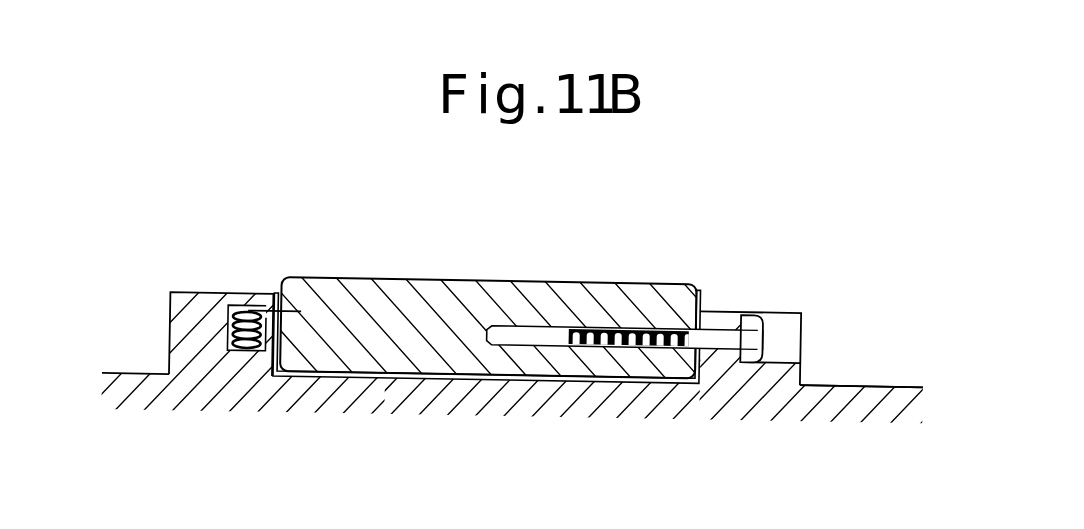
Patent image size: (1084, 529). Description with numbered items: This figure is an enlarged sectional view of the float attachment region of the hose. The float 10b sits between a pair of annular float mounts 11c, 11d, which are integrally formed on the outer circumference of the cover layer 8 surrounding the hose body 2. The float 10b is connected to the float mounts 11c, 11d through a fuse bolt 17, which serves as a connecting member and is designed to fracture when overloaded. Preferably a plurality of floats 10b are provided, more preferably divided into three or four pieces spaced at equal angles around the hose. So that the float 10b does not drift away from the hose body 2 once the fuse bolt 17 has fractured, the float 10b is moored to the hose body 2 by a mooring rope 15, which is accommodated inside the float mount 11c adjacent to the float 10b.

The hose body 2 is at (903, 372).
The cover layer 8 is at (835, 374).
The float 10b is at (548, 289).
The float mount 11c is at (195, 299).
The float mount 11d is at (717, 307).
The mooring rope 15 is at (247, 309).
The fuse bolt 17 is at (763, 323).